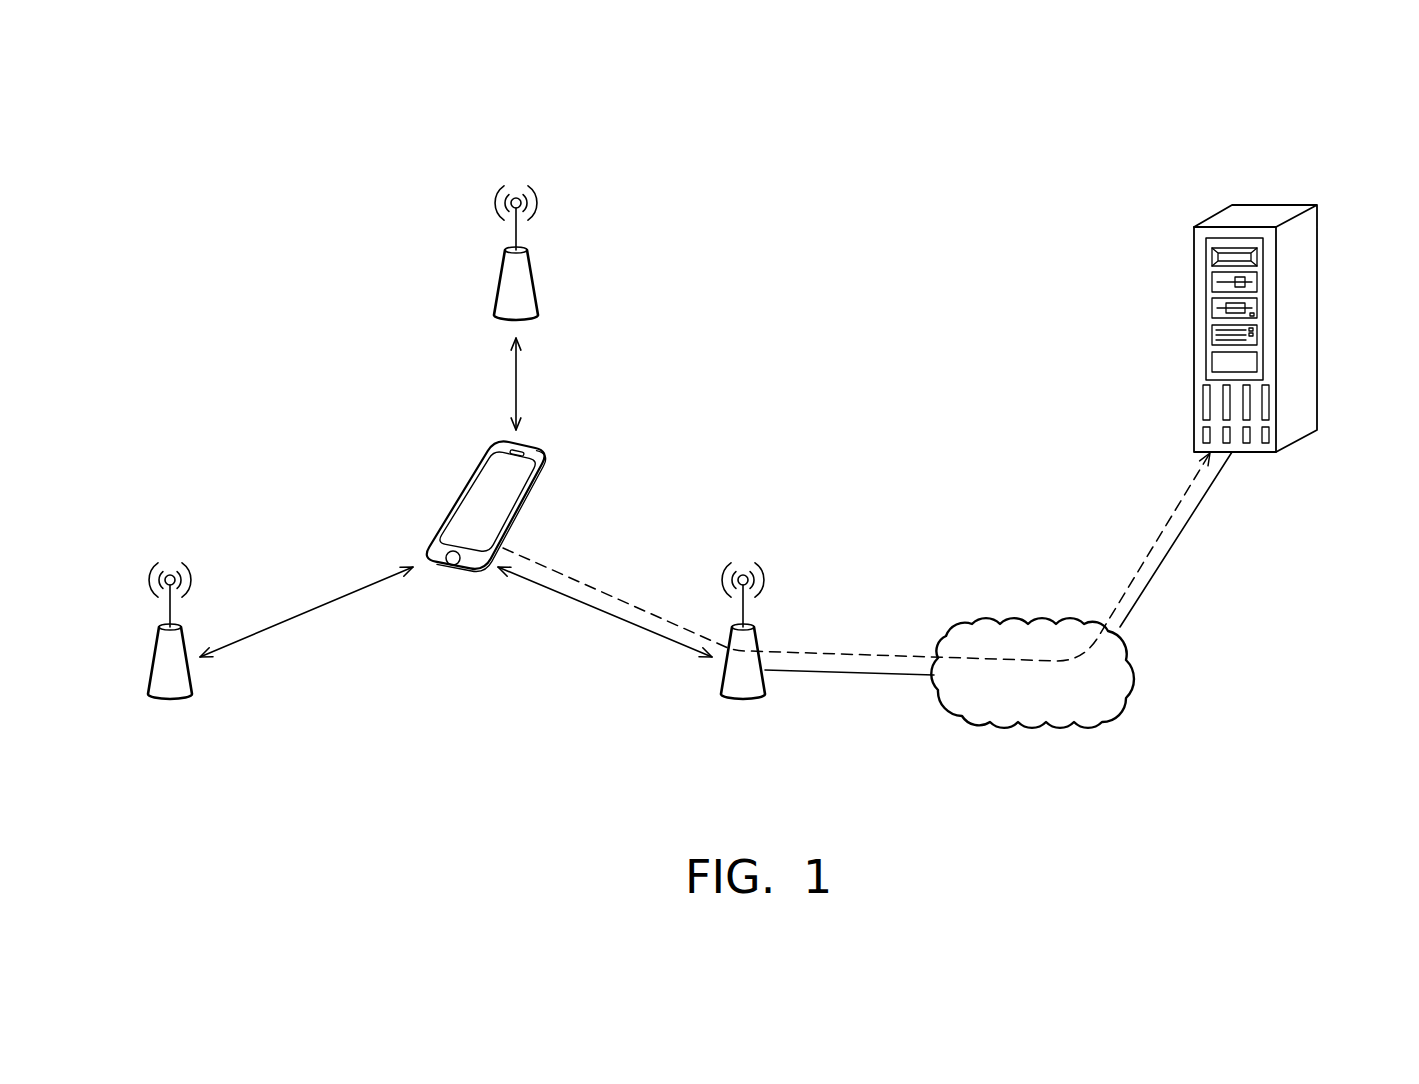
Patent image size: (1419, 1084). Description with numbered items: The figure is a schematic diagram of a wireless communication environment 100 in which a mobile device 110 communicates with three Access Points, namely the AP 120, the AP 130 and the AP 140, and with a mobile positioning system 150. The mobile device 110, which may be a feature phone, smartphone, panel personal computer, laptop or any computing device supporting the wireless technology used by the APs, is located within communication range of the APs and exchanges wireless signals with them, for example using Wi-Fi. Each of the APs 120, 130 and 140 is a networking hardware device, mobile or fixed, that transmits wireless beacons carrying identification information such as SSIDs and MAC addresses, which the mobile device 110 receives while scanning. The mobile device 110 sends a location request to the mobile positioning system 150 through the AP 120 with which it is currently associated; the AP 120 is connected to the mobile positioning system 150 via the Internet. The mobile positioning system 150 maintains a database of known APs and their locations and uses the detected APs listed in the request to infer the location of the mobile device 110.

The wireless communication environment 100 is at (187, 163).
The mobile device 110 is at (455, 572).
The Access Point 120 is at (746, 698).
The Access Point 130 is at (538, 281).
The Access Point 140 is at (169, 698).
The mobile positioning system 150 is at (1317, 313).